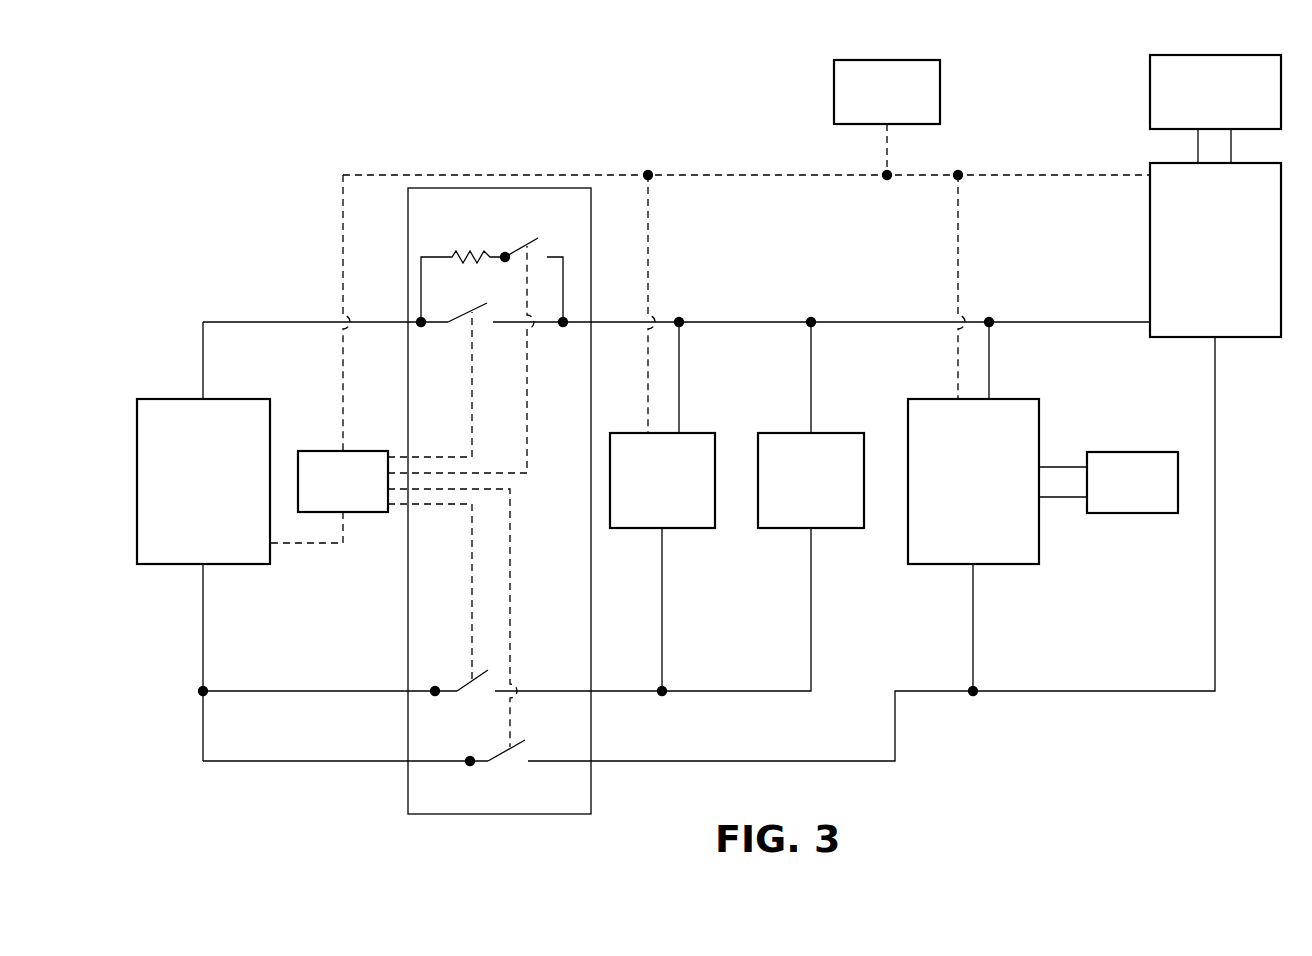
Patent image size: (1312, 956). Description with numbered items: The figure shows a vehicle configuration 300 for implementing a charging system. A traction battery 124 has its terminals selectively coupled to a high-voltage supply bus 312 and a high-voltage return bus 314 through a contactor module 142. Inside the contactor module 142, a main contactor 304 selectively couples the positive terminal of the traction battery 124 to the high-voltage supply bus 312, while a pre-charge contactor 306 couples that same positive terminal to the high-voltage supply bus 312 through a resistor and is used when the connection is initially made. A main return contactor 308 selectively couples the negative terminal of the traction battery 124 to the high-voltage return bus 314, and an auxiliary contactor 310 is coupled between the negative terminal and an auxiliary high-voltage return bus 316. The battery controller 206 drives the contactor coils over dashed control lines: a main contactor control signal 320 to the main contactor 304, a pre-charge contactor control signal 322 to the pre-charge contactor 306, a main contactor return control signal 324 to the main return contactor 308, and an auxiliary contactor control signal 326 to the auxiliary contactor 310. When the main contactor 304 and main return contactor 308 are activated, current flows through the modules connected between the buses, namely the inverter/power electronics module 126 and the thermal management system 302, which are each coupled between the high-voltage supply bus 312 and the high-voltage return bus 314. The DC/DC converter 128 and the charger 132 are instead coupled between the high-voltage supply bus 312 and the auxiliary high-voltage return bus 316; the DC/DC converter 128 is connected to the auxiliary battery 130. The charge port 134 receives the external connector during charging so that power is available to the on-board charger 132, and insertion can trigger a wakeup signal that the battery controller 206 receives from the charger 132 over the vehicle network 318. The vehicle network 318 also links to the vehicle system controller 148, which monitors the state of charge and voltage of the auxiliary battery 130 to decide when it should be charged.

The vehicle configuration 300 is at (353, 119).
The traction battery 124 is at (190, 399).
The battery controller 206 is at (335, 451).
The contactor module 142 is at (506, 188).
The main contactor 304 is at (468, 311).
The pre-charge contactor 306 is at (533, 238).
The main return contactor 308 is at (470, 683).
The auxiliary contactor 310 is at (505, 752).
The high-voltage supply bus 312 is at (716, 322).
The high-voltage return bus 314 is at (705, 691).
The auxiliary high-voltage return bus 316 is at (740, 761).
The vehicle network 318 is at (713, 175).
The main contactor control signal 320 is at (472, 401).
The pre-charge contactor control signal 322 is at (527, 401).
The main contactor return control signal 324 is at (510, 596).
The auxiliary contactor control signal 326 is at (472, 596).
The inverter/power electronics module 126 is at (698, 433).
The thermal management system 302 is at (826, 433).
The DC/DC converter 128 is at (1007, 399).
The auxiliary battery 130 is at (1107, 452).
The charger 132 is at (1150, 245).
The charge port 134 is at (1150, 90).
The vehicle system controller 148 is at (834, 90).